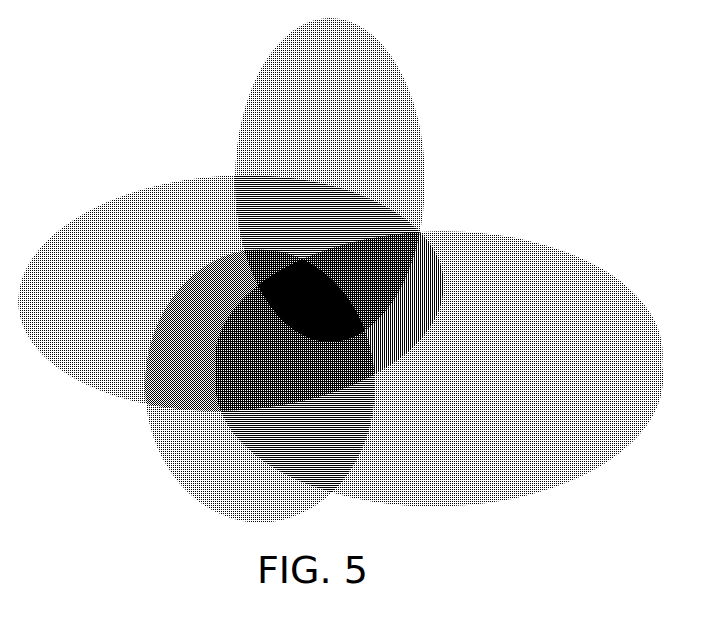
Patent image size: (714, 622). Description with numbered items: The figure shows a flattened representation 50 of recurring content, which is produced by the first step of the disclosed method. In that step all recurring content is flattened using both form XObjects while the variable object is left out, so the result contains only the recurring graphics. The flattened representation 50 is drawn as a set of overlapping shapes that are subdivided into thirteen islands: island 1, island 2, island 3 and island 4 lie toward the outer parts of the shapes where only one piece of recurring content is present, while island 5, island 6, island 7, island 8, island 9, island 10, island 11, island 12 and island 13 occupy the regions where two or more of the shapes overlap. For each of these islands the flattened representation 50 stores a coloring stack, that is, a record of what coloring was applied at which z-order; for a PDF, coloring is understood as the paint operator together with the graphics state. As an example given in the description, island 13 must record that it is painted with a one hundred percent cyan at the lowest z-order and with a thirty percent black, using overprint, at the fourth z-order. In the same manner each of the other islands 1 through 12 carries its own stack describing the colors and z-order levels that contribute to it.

The island 1 is at (231, 293).
The island 2 is at (330, 180).
The island 3 is at (439, 368).
The island 4 is at (260, 386).
The island 5 is at (270, 270).
The island 6 is at (296, 375).
The island 7 is at (302, 462).
The island 8 is at (385, 340).
The island 9 is at (399, 272).
The island 10 is at (307, 302).
The island 11 is at (365, 275).
The island 12 is at (298, 215).
The island 13 is at (181, 354).
The flattened representation 50 is at (340, 270).